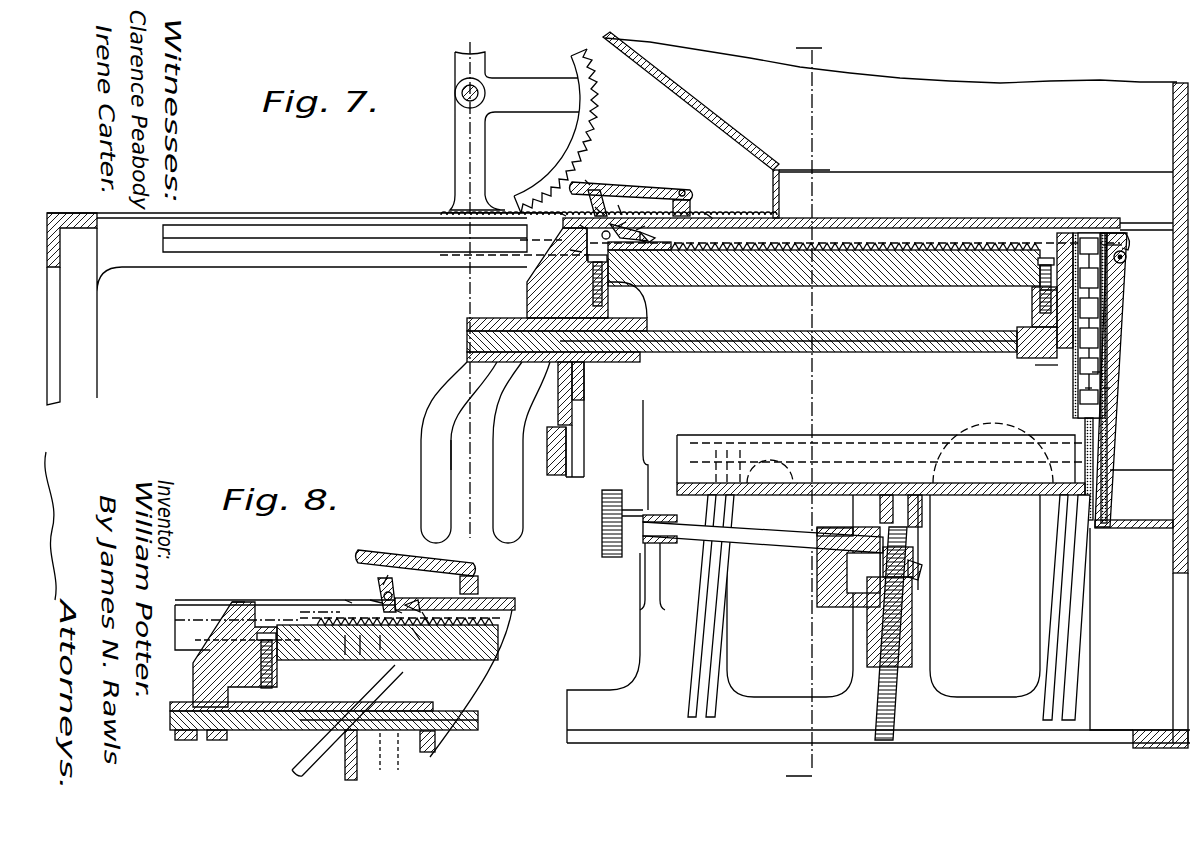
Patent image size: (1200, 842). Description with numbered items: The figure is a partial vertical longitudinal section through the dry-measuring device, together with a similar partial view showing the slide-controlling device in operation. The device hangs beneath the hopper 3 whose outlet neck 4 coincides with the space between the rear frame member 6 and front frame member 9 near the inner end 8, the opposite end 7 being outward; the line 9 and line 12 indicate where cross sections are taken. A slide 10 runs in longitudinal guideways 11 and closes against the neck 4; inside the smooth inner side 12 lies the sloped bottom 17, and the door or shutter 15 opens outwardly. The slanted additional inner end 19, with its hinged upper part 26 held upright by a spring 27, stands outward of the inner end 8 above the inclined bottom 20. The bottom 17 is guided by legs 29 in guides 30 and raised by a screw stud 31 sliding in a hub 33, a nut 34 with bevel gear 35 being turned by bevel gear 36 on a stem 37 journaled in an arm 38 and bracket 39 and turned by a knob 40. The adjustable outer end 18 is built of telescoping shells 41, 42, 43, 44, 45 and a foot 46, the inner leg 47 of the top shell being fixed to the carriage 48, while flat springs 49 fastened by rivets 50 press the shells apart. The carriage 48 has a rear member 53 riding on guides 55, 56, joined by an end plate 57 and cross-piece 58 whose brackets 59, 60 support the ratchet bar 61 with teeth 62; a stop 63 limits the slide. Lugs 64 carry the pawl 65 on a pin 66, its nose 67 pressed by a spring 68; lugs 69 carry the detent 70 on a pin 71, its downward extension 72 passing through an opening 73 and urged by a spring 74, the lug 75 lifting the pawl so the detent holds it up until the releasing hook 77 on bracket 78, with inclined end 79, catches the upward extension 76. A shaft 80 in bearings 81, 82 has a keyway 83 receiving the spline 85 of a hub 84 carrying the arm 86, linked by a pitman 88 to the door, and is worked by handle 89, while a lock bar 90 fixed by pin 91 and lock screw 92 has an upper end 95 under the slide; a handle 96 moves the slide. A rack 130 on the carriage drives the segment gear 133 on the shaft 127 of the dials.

In FIG. 7, the sloping bottom or hopper 3 is at (958, 92).
In FIG. 7, the outlet neck 4 is at (895, 186).
In FIG. 7, the rear frame member 6 is at (640, 655).
In FIG. 8, the rear frame member 6 is at (495, 675).
In FIG. 7, the end 7 is at (60, 363).
In FIG. 7, the inner end 8 is at (1175, 408).
In FIG. 7, the front frame member 9 is at (470, 289).
In FIG. 7, the slide 10 is at (975, 219).
In FIG. 8, the slide 10 is at (515, 603).
In FIG. 7, the longitudinal guideways 11 is at (386, 255).
In FIG. 8, the longitudinal guideways 11 is at (262, 599).
In FIG. 7, the smooth inner side 12 is at (831, 408).
In FIG. 7, the door or shutter 15 is at (716, 125).
In FIG. 7, the bottom 17 is at (972, 495).
In FIG. 7, the adjustable outer end 18 is at (1088, 388).
In FIG. 7, the additional inner end 19 is at (1100, 372).
In FIG. 7, the bottom 20 is at (1132, 530).
In FIG. 7, the upper part 26 is at (1120, 232).
In FIG. 7, the spring 27 is at (1127, 260).
In FIG. 7, the legs 29 is at (1068, 650).
In FIG. 7, the guides 30 is at (1062, 614).
In FIG. 7, the screw stud 31 is at (895, 680).
In FIG. 7, the hub 33 is at (912, 610).
In FIG. 7, the nut 34 is at (912, 585).
In FIG. 7, the bevel gear 35 is at (922, 568).
In FIG. 7, the bevel gear 36 is at (850, 605).
In FIG. 7, the stem 37 is at (755, 540).
In FIG. 7, the arm 38 is at (818, 565).
In FIG. 7, the bracket 39 is at (660, 560).
In FIG. 7, the knob 40 is at (610, 558).
In FIG. 7, the shell 41 is at (1126, 248).
In FIG. 7, the shell 42 is at (1120, 295).
In FIG. 7, the shell 43 is at (1107, 320).
In FIG. 7, the shell 44 is at (1110, 388).
In FIG. 7, the shell 45 is at (1098, 437).
In FIG. 7, the foot 46 is at (1110, 485).
In FIG. 7, the inner leg 47 is at (1080, 230).
In FIG. 7, the carriage 48 is at (1020, 360).
In FIG. 8, the carriage 48 is at (200, 605).
In FIG. 7, the flat spring 49 is at (1083, 382).
In FIG. 7, the rivet 50 is at (1100, 332).
In FIG. 7, the rear member 53 is at (905, 262).
In FIG. 8, the rear member 53 is at (500, 620).
In FIG. 7, the guide 55 is at (935, 265).
In FIG. 8, the guide 55 is at (180, 600).
In FIG. 7, the guide 56 is at (1032, 292).
In FIG. 7, the end plate 57 is at (1062, 230).
In FIG. 7, the cross-piece 58 is at (530, 287).
In FIG. 8, the cross-piece 58 is at (200, 670).
In FIG. 7, the bracket 59 is at (1038, 305).
In FIG. 7, the bracket 60 is at (607, 295).
In FIG. 8, the bracket 60 is at (276, 670).
In FIG. 7, the ratchet bar 61 is at (760, 286).
In FIG. 8, the ratchet bar 61 is at (497, 650).
In FIG. 7, the ratchet teeth 62 is at (895, 246).
In FIG. 8, the ratchet teeth 62 is at (482, 618).
In FIG. 7, the stop 63 is at (560, 213).
In FIG. 8, the stop 63 is at (250, 600).
In FIG. 7, the lugs 64 is at (662, 240).
In FIG. 7, the pawl 65 is at (690, 232).
In FIG. 8, the pawl 65 is at (420, 635).
In FIG. 7, the pin 66 is at (640, 228).
In FIG. 8, the pin 66 is at (412, 604).
In FIG. 7, the nose 67 is at (622, 224).
In FIG. 8, the nose 67 is at (380, 645).
In FIG. 7, the spring 68 is at (656, 250).
In FIG. 8, the spring 68 is at (425, 628).
In FIG. 7, the lugs 69 is at (595, 207).
In FIG. 8, the lugs 69 is at (370, 600).
In FIG. 7, the detent 70 is at (608, 230).
In FIG. 8, the detent 70 is at (384, 594).
In FIG. 7, the pin 71 is at (594, 190).
In FIG. 7, the downward extension 72 is at (570, 250).
In FIG. 8, the downward extension 72 is at (396, 610).
In FIG. 7, the opening 73 is at (620, 205).
In FIG. 8, the opening 73 is at (345, 640).
In FIG. 7, the spring 74 is at (546, 268).
In FIG. 8, the spring 74 is at (360, 645).
In FIG. 8, the lug 75 is at (312, 612).
In FIG. 7, the upward extension 76 is at (585, 180).
In FIG. 8, the upward extension 76 is at (385, 578).
In FIG. 7, the releasing hook 77 is at (668, 188).
In FIG. 8, the releasing hook 77 is at (400, 555).
In FIG. 7, the bracket 78 is at (688, 208).
In FIG. 8, the bracket 78 is at (478, 585).
In FIG. 7, the inclined lower outer end 79 is at (580, 225).
In FIG. 8, the inclined lower outer end 79 is at (376, 585).
In FIG. 7, the shaft 80 is at (760, 352).
In FIG. 8, the shaft 80 is at (478, 725).
In FIG. 7, the bearing 81 is at (1035, 368).
In FIG. 7, the bearing 82 is at (530, 362).
In FIG. 8, the bearing 82 is at (225, 740).
In FIG. 7, the keyway 83 is at (835, 341).
In FIG. 8, the keyway 83 is at (450, 730).
In FIG. 7, the hub 84 is at (575, 380).
In FIG. 8, the hub 84 is at (417, 745).
In FIG. 7, the spline 85 is at (648, 331).
In FIG. 8, the spline 85 is at (430, 712).
In FIG. 7, the arm 86 is at (568, 478).
In FIG. 8, the arm 86 is at (345, 762).
In FIG. 7, the pitman 88 is at (552, 475).
In FIG. 7, the handle 89 is at (425, 425).
In FIG. 8, the handle 89 is at (186, 741).
In FIG. 7, the lock bar 90 is at (584, 415).
In FIG. 8, the lock bar 90 is at (387, 757).
In FIG. 7, the pin 91 is at (585, 395).
In FIG. 7, the lock screw 92 is at (500, 420).
In FIG. 7, the upper end 95 is at (555, 212).
In FIG. 8, the upper end 95 is at (345, 600).
In FIG. 7, the handle 96 is at (520, 520).
In FIG. 8, the handle 96 is at (292, 770).
In FIG. 7, the shaft 127 is at (462, 103).
In FIG. 7, the rack 130 is at (705, 213).
In FIG. 7, the segment gear 133 is at (470, 200).